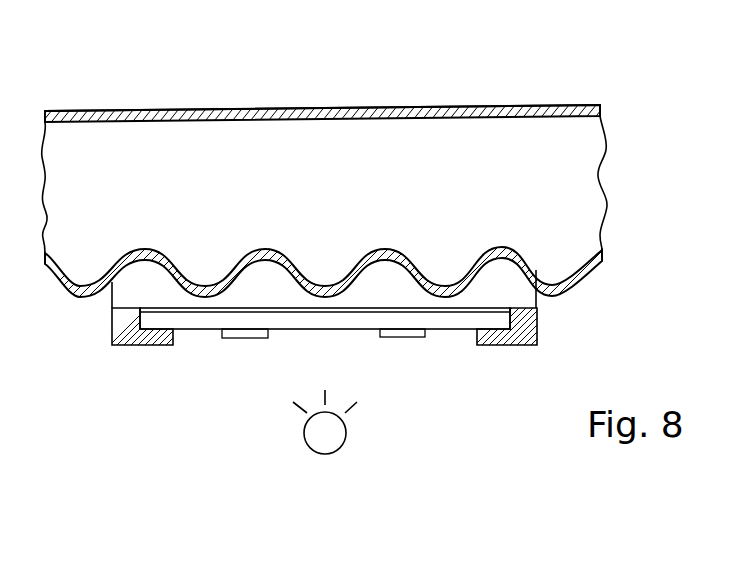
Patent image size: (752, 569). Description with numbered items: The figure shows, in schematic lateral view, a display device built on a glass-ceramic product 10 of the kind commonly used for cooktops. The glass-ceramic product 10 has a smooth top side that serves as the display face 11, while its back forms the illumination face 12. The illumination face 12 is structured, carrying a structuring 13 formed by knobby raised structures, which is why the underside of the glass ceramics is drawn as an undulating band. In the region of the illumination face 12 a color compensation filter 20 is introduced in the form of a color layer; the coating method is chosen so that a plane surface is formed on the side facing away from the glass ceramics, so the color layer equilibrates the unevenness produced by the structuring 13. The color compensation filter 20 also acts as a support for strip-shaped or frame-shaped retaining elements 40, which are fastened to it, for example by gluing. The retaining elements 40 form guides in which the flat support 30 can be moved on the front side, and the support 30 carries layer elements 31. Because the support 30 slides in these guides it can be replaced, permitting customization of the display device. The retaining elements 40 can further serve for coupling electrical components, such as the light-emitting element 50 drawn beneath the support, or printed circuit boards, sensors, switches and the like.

The glass-ceramic product 10 is at (448, 130).
The display face 11 is at (377, 103).
The illumination face 12 is at (591, 288).
The structuring 13 is at (533, 266).
The color compensation filter 20 is at (197, 293).
The support 30 is at (462, 318).
The layer elements 31 is at (247, 338).
The retaining elements 40 is at (127, 346).
The light-emitting element 50 is at (318, 438).